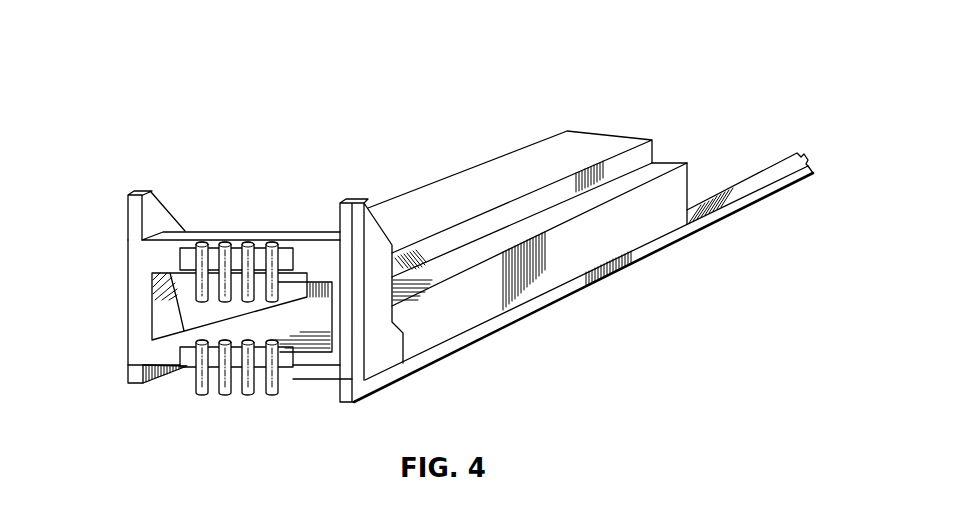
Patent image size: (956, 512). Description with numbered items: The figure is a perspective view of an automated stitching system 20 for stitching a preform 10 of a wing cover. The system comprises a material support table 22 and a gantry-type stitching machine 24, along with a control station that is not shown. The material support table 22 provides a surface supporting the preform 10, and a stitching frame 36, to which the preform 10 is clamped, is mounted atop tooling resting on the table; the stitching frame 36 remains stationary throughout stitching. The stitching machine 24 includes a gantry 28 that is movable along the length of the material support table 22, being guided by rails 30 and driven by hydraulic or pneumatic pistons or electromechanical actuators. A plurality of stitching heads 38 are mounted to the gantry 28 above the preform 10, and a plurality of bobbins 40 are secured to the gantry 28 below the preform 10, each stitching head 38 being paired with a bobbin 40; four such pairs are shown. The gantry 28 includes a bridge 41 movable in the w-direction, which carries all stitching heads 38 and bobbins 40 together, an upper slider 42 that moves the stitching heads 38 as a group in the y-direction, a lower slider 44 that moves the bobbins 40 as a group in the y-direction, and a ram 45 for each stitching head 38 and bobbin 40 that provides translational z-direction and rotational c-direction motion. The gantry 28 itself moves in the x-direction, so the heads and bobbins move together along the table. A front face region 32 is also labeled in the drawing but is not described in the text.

The preform 10 is at (455, 190).
The automated stitching system 20 is at (527, 346).
The material support table 22 is at (686, 158).
The stitching machine 24 is at (124, 201).
The gantry 28 is at (161, 204).
The rails 30 is at (758, 205).
The front face of header 32 is at (126, 357).
The stitching frame 36 is at (653, 143).
The stitching heads 38 is at (177, 316).
The bobbins 40 is at (274, 353).
The bridge 41 is at (140, 328).
The upper slider 42 is at (297, 252).
The lower slider 44 is at (187, 372).
The ram 45 is at (224, 238).